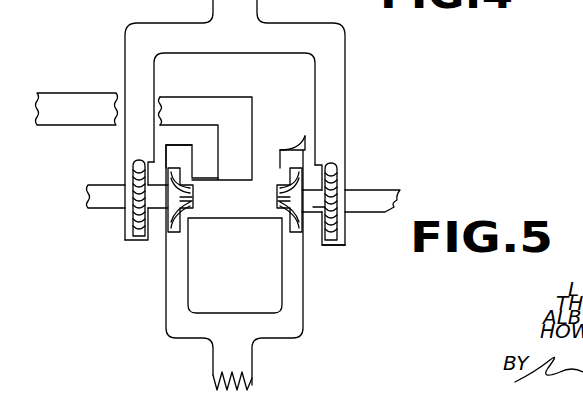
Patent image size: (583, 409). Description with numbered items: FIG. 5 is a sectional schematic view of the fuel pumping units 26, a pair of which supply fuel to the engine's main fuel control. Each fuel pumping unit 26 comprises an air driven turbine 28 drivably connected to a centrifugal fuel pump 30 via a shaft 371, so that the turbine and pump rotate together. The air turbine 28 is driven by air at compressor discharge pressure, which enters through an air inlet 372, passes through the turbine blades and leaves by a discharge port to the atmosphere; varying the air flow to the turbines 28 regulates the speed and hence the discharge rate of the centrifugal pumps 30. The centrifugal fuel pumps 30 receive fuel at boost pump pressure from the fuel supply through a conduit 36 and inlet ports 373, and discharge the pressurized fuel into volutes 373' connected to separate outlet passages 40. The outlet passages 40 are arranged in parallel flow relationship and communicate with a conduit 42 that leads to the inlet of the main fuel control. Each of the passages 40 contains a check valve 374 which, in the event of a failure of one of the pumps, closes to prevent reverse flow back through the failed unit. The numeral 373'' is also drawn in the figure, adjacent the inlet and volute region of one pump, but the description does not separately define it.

The fuel pumping unit 26 is at (348, 113).
The air driven turbine 28 is at (135, 227).
The centrifugal fuel pump 30 is at (172, 232).
The conduit 36 is at (227, 107).
The outlet passage 40 is at (168, 312).
The conduit 42 is at (250, 368).
The shaft 371 is at (316, 213).
The air inlet 372 is at (327, 246).
The inlet port 373 is at (235, 200).
The volute 373' is at (341, 134).
The plate 373'' is at (190, 103).
The check valve 374 is at (169, 260).